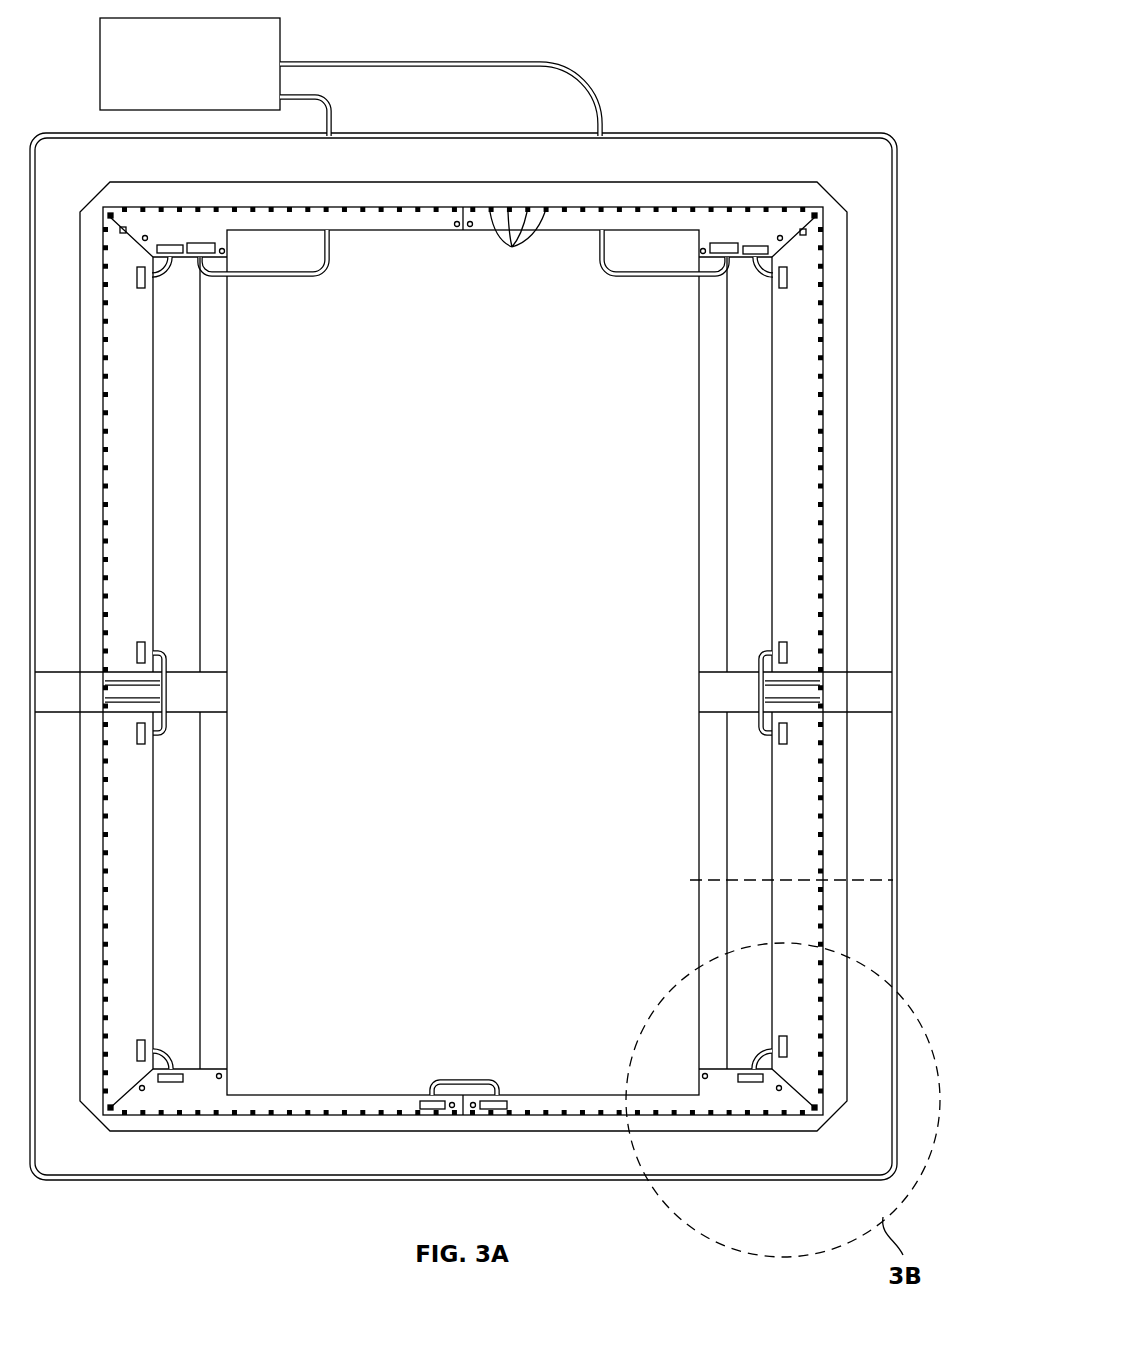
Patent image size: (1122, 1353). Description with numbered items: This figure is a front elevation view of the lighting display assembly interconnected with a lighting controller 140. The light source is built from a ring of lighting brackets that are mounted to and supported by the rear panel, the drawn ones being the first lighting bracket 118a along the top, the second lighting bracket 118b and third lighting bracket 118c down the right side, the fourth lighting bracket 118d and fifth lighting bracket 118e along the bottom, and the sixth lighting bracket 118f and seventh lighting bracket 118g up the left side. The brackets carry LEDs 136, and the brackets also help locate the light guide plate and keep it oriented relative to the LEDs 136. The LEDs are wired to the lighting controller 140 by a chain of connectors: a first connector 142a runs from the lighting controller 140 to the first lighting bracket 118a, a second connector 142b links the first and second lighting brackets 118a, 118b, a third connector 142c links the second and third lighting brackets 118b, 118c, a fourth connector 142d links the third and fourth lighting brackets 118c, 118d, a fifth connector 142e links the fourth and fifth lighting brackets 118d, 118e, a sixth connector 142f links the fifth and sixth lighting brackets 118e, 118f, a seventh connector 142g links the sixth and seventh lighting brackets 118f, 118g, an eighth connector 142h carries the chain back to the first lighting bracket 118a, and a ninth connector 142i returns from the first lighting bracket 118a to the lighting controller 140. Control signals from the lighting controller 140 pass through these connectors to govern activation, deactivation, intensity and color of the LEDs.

The lighting controller 140 is at (168, 77).
The first connector 142a is at (575, 72).
The second connector 142b is at (758, 262).
The third connector 142c is at (760, 697).
The fourth connector 142d is at (755, 1058).
The fifth connector 142e is at (462, 1082).
The sixth connector 142f is at (165, 1052).
The seventh connector 142g is at (165, 697).
The eighth connector 142h is at (170, 278).
The ninth connector 142i is at (328, 118).
The first lighting bracket 118a is at (663, 222).
The second lighting bracket 118b is at (793, 482).
The third lighting bracket 118c is at (780, 835).
The fourth lighting bracket 118d is at (575, 1102).
The fifth lighting bracket 118e is at (256, 1100).
The sixth lighting bracket 118f is at (130, 888).
The seventh lighting bracket 118g is at (130, 537).
The LEDs 136 is at (517, 246).